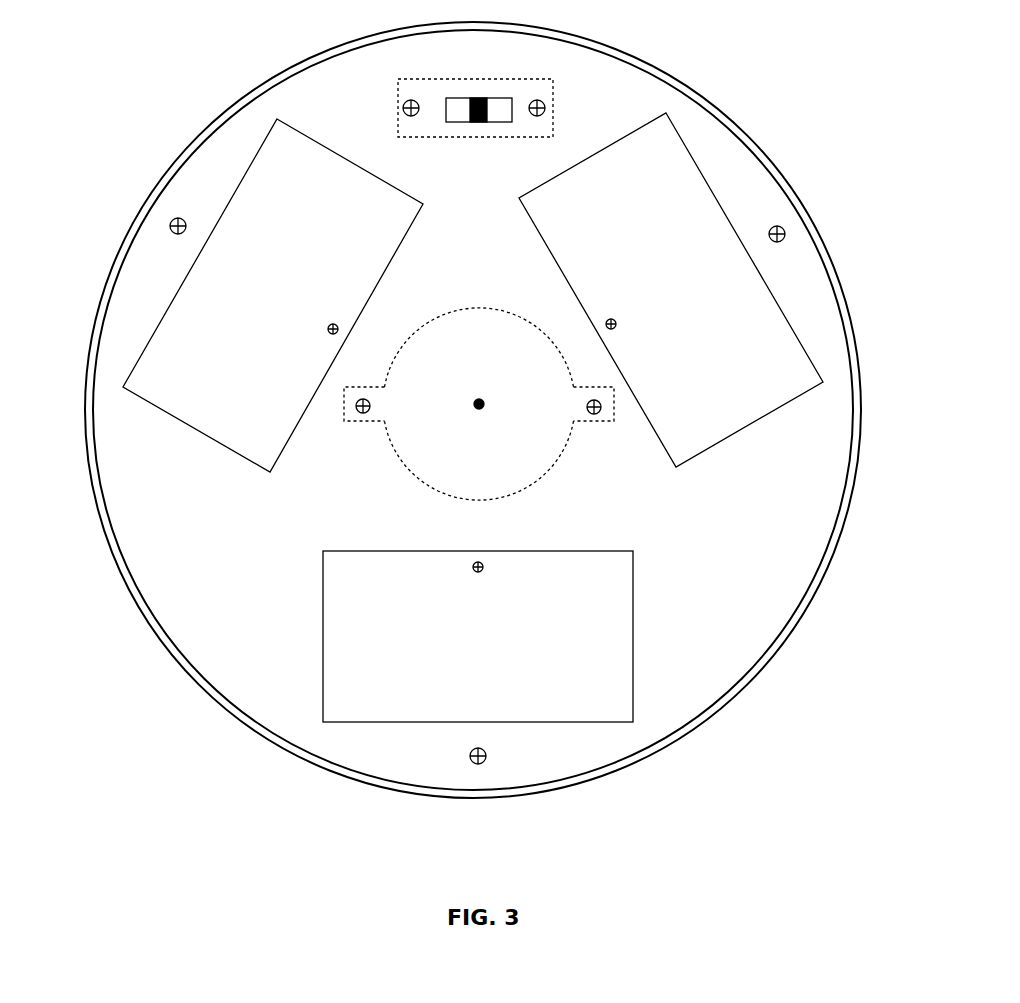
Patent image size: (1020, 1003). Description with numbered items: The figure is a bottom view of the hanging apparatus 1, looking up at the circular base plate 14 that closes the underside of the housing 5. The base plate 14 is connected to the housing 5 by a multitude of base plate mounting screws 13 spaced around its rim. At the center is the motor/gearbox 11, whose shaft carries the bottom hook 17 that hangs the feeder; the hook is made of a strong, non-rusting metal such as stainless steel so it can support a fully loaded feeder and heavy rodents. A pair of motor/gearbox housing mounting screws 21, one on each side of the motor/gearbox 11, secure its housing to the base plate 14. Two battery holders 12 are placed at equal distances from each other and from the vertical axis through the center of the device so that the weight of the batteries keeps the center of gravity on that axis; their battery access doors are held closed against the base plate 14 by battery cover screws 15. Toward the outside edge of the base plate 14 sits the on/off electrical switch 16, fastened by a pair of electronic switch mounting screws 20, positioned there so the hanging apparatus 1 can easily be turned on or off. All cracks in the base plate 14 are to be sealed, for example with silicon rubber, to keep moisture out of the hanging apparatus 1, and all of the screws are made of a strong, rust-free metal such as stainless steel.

The hanging apparatus 1 is at (88, 104).
The housing 5 is at (452, 797).
The motor/gearbox 11 is at (498, 307).
The battery holders 12 is at (800, 397).
The base plate mounting screws 13 is at (779, 226).
The base plate 14 is at (726, 645).
The battery cover screws 15 is at (613, 318).
The on/off electrical switch 16 is at (410, 79).
The bottom hook 17 is at (484, 404).
The electronic switch mounting screws 20 is at (540, 99).
The motor/gearbox housing mounting screws 21 is at (363, 421).